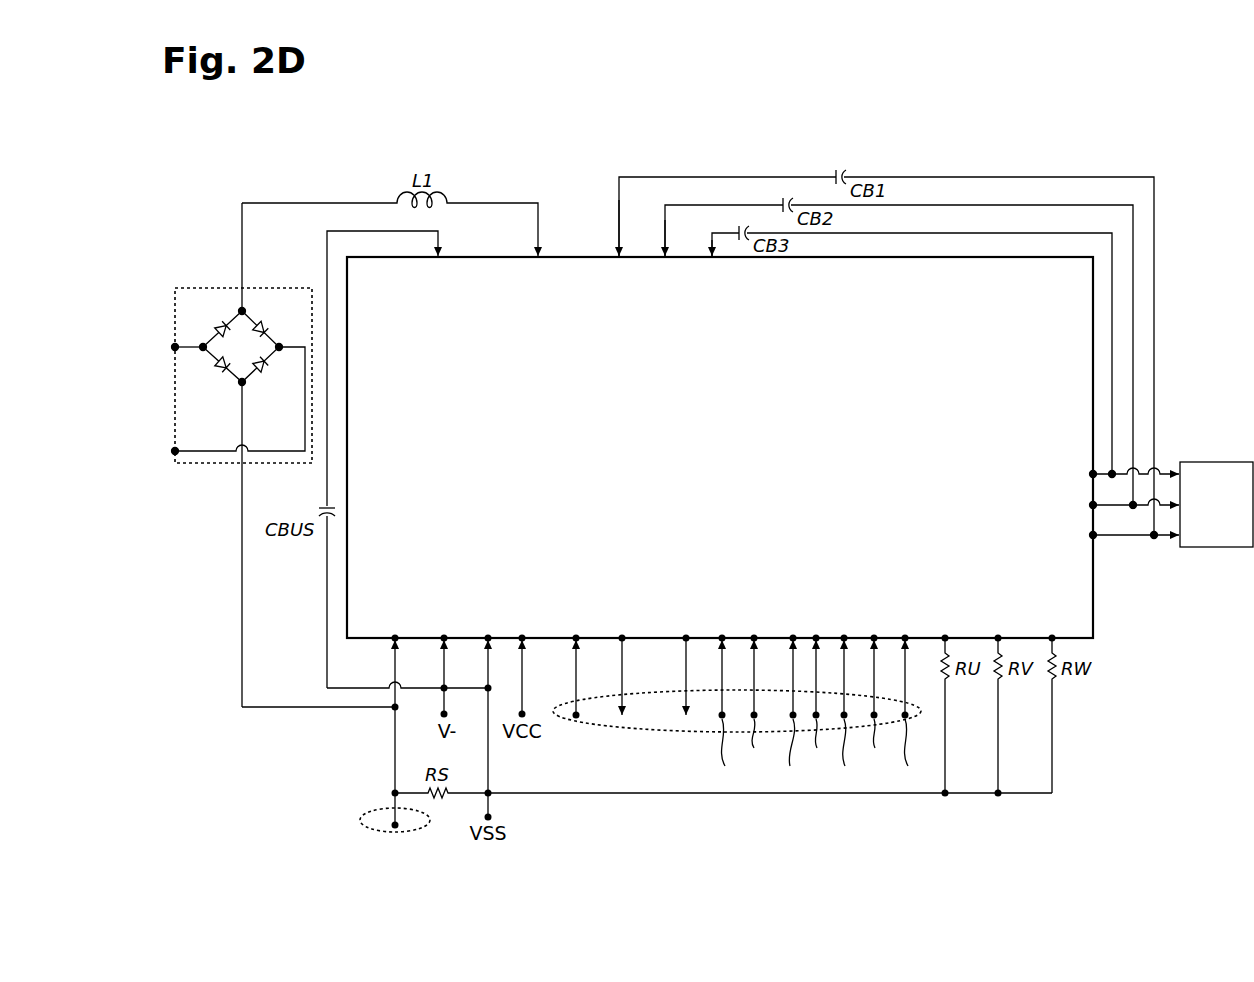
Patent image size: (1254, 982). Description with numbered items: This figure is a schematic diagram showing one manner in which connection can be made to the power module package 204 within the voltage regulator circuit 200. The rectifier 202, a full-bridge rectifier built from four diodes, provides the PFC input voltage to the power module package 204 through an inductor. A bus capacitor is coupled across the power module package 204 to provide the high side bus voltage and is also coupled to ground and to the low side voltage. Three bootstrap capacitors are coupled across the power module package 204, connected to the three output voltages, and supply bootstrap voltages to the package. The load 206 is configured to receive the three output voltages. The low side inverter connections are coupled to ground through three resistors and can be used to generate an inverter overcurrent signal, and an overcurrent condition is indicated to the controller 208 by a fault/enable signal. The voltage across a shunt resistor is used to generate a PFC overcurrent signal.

The voltage regulator circuit 200 is at (1160, 103).
The rectifier 202 is at (257, 288).
The power module package 204 is at (720, 447).
The load 206 is at (1172, 504).
The controller 208 is at (365, 813).